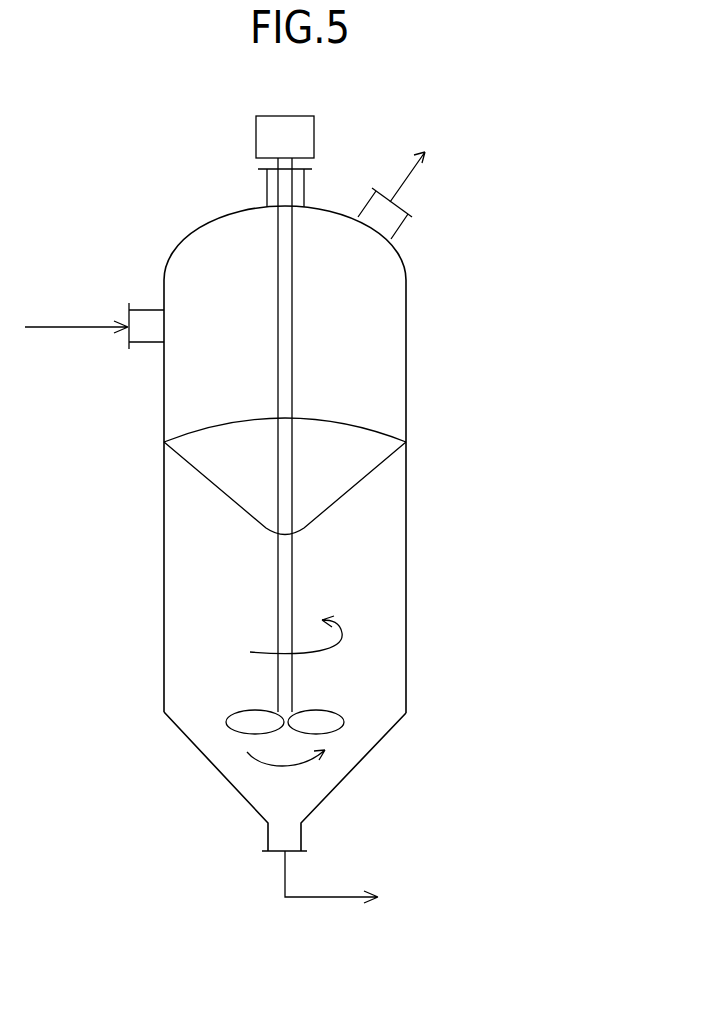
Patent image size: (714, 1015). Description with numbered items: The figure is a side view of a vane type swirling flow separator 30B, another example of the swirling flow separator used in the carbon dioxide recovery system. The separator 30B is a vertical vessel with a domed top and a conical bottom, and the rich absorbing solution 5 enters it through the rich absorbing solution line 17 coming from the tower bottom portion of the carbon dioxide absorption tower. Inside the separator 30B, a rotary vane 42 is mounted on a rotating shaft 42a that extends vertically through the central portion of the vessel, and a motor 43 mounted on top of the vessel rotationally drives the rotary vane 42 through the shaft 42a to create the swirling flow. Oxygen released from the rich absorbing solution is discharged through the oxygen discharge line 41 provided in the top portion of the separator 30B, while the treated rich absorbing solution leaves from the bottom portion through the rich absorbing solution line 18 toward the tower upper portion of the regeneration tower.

The liquid / slurry in vessel 5 is at (387, 540).
The rich absorbing solution line 17 is at (63, 327).
The rich absorbing solution line 18 is at (332, 897).
The vane type swirling flow separator 30B is at (406, 300).
The oxygen discharge line 41 is at (393, 228).
The rotary vane 42 is at (338, 730).
The rotating shaft 42a is at (292, 373).
The motor 43 is at (314, 133).